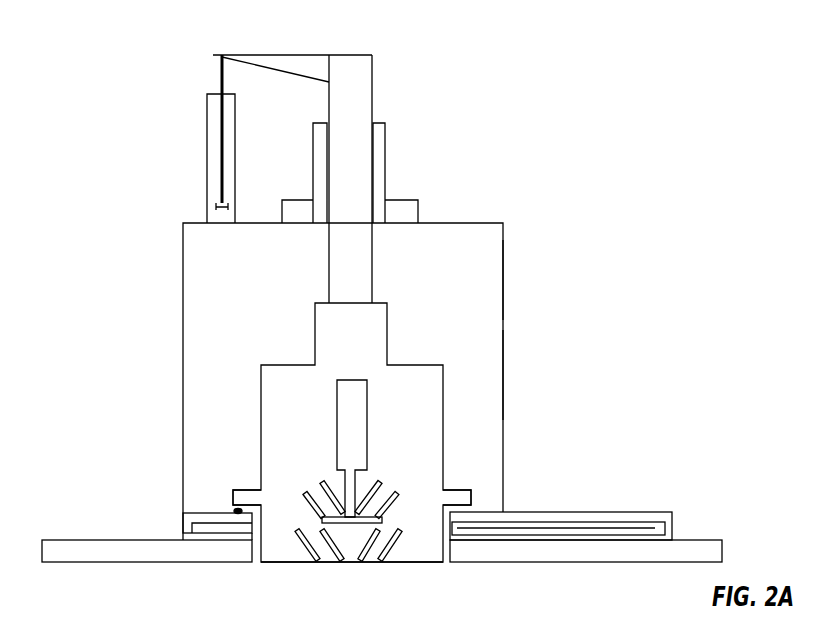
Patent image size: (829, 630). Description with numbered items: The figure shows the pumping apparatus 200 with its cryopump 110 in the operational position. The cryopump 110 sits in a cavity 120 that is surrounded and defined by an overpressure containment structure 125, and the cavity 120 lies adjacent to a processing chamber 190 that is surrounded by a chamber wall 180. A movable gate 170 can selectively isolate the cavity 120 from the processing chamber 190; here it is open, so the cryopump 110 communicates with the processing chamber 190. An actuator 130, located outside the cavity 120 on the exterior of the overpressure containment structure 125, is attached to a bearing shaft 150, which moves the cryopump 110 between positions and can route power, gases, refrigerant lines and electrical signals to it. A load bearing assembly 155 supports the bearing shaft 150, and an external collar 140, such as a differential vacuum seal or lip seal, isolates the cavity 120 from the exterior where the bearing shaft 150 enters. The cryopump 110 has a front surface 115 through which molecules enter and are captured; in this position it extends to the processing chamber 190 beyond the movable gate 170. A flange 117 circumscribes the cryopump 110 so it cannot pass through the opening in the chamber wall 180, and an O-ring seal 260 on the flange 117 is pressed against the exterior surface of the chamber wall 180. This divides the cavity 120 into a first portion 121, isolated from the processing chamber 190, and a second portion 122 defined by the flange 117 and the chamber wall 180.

The pumping apparatus 200 is at (153, 252).
The cryopump 110 is at (254, 376).
The front surface 115 is at (330, 564).
The flange 117 is at (250, 489).
The cavity 120 is at (467, 263).
The first portion of the cavity 121 is at (472, 348).
The second portion of the cavity 122 is at (445, 537).
The overpressure containment structure 125 is at (504, 280).
The actuator 130 is at (207, 155).
The external collar 140 is at (385, 165).
The bearing shaft 150 is at (328, 244).
The load bearing assembly 155 is at (293, 55).
The movable gate 170 is at (533, 512).
The chamber wall 180 is at (222, 558).
The processing chamber 190 is at (418, 600).
The O-ring seal 260 is at (234, 512).